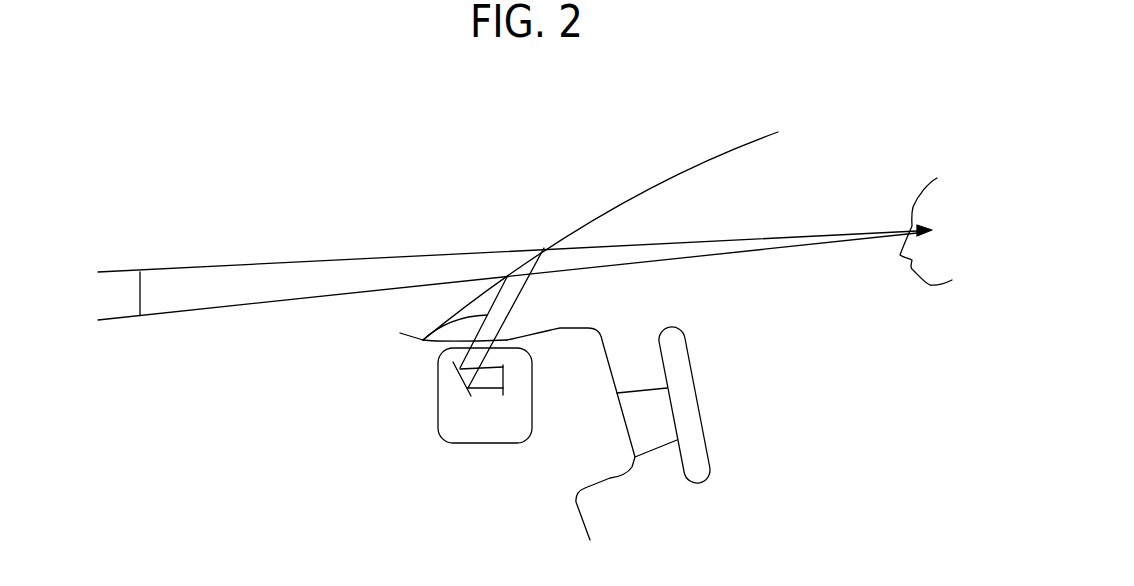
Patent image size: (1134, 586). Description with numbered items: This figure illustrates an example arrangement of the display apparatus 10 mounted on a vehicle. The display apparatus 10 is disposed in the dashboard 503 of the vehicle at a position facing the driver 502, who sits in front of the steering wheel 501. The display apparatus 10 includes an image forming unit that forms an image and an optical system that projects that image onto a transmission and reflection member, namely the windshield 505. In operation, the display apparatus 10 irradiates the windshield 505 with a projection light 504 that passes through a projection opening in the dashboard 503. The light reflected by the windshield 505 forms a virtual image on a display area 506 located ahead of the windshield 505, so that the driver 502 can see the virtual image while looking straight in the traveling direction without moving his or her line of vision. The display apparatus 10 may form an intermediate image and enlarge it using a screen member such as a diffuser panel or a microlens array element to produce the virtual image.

The display apparatus 10 is at (485, 443).
The steering wheel 501 is at (683, 405).
The driver 502 is at (930, 278).
The dashboard 503 is at (610, 465).
The projection light 504 is at (427, 338).
The windshield 505 is at (648, 190).
The display area 506 is at (142, 295).